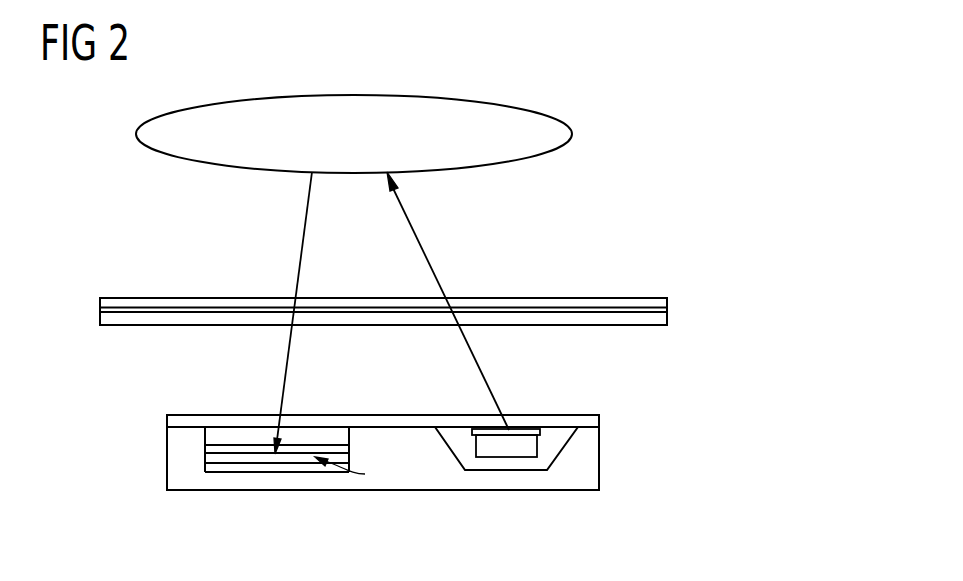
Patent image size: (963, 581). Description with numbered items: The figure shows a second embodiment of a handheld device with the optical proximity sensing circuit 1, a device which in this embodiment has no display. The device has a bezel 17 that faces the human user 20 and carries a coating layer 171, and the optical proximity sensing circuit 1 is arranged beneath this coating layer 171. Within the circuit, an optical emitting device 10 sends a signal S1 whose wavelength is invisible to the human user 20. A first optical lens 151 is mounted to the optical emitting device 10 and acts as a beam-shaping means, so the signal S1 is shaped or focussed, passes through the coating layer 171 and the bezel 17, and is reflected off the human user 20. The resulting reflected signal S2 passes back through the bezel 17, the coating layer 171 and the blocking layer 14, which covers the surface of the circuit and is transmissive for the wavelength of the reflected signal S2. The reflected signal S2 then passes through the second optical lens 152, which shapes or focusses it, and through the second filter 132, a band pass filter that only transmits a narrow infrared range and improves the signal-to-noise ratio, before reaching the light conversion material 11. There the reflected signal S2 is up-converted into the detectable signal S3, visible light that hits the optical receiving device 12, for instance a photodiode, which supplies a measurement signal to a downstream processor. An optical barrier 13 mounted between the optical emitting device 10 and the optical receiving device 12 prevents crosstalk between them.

The optical proximity sensing circuit 1 is at (396, 455).
The optical emitting device 10 is at (516, 451).
The light conversion material 11 is at (228, 487).
The optical receiving device 12 is at (228, 487).
The optical barrier 13 is at (418, 478).
The blocking layer 14 is at (590, 422).
The bezel 17 is at (379, 303).
The human user 20 is at (573, 134).
The second filter 132 is at (225, 472).
The first optical lens 151 is at (523, 428).
The second optical lens 152 is at (228, 487).
The coating layer 171 is at (108, 317).
The signal S1 is at (432, 273).
The reflected signal S2 is at (307, 248).
The detectable signal S3 is at (353, 474).